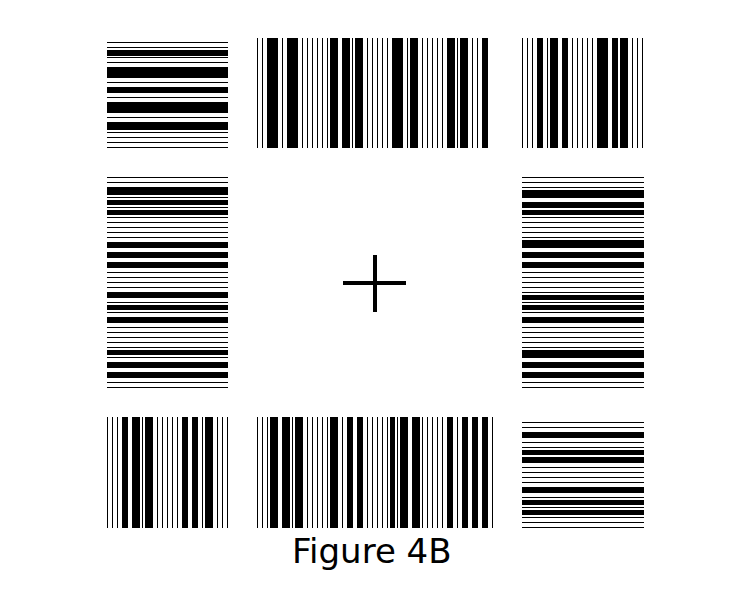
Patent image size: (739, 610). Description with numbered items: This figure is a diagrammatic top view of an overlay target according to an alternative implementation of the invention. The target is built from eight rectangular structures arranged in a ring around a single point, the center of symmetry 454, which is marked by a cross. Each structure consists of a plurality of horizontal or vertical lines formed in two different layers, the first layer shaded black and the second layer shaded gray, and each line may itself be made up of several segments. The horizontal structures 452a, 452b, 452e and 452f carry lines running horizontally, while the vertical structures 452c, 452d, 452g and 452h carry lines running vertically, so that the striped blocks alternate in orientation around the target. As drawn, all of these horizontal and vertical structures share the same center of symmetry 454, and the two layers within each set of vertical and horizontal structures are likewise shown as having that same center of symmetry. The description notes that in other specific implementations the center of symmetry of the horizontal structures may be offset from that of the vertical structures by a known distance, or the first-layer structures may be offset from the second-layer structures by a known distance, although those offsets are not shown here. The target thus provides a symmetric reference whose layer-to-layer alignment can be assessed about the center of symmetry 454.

The horizontal structure 452a is at (140, 89).
The horizontal structure 452b is at (125, 260).
The vertical structure 452c is at (127, 448).
The vertical structure 452d is at (373, 427).
The horizontal structure 452e is at (633, 498).
The horizontal structure 452f is at (558, 258).
The vertical structure 452g is at (540, 137).
The vertical structure 452h is at (387, 141).
The center of symmetry 454 is at (378, 271).